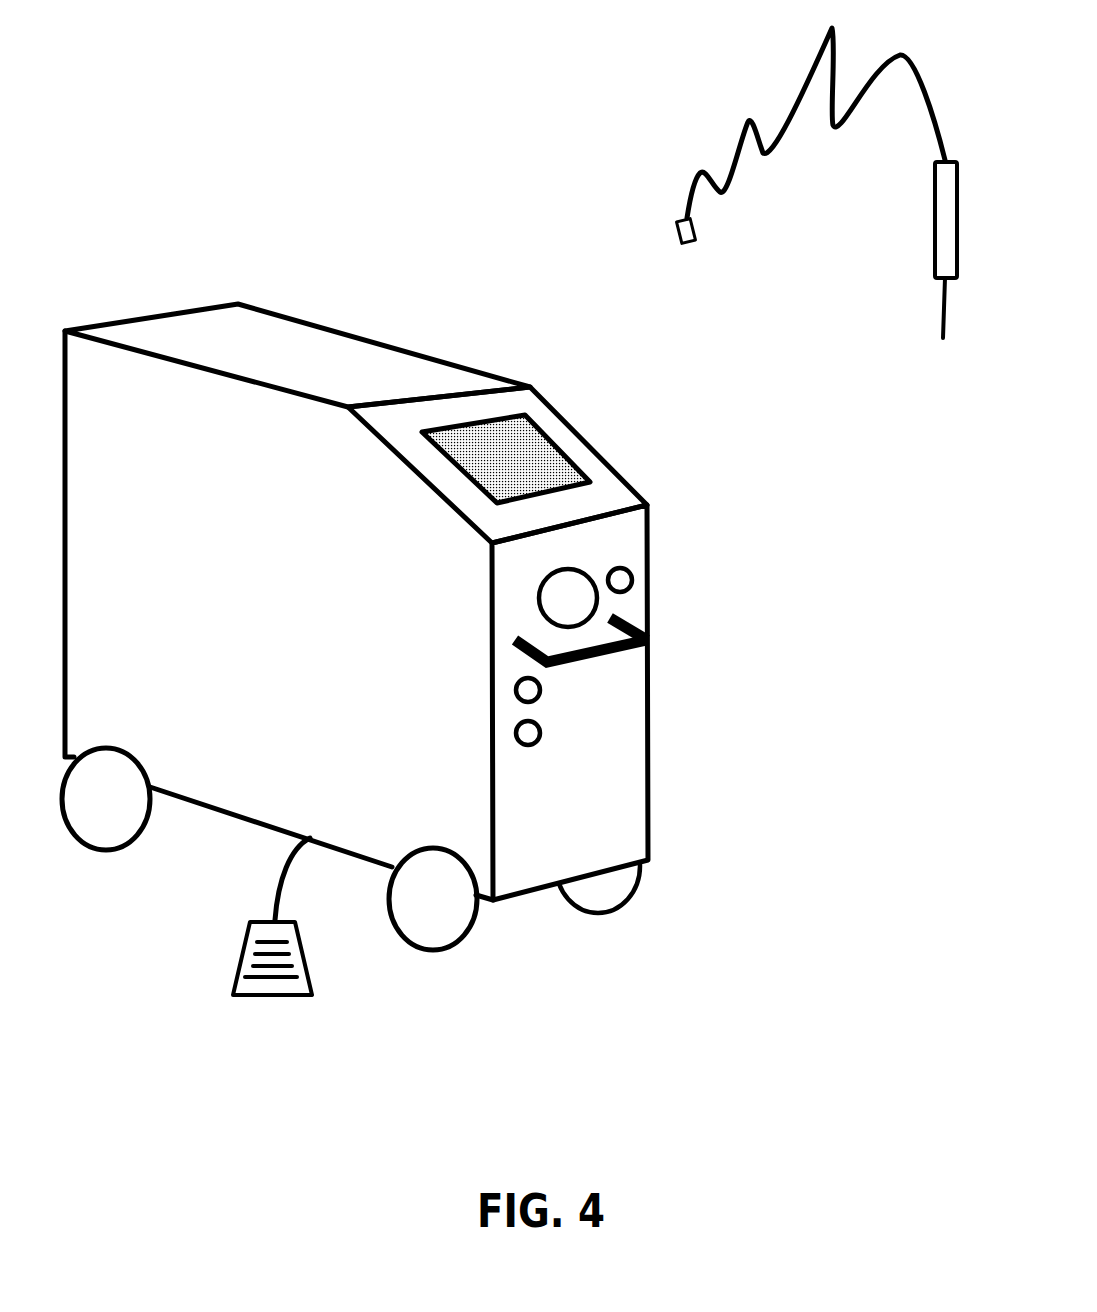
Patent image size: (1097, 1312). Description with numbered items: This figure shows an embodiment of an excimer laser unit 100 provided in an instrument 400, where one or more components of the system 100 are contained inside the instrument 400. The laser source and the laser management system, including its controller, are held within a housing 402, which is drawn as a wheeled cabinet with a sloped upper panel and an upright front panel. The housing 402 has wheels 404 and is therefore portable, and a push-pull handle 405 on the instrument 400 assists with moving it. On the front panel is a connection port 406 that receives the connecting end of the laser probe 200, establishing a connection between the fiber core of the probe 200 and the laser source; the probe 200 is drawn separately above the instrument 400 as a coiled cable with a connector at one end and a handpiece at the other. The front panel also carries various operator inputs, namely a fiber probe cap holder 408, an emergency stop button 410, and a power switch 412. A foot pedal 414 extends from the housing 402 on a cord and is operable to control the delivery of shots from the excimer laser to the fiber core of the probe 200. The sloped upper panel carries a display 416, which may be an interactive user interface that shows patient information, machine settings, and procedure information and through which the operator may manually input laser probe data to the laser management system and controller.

The excimer laser unit 100 is at (203, 232).
The laser probe 200 is at (700, 110).
The instrument 400 is at (365, 335).
The housing 402 is at (168, 338).
The wheels 404 is at (435, 925).
The push-pull handle 405 is at (647, 638).
The connection port 406 is at (575, 595).
The fiber probe cap holder 408 is at (620, 580).
The emergency stop button 410 is at (528, 690).
The power switch 412 is at (530, 735).
The foot pedal 414 is at (235, 962).
The display 416 is at (522, 445).